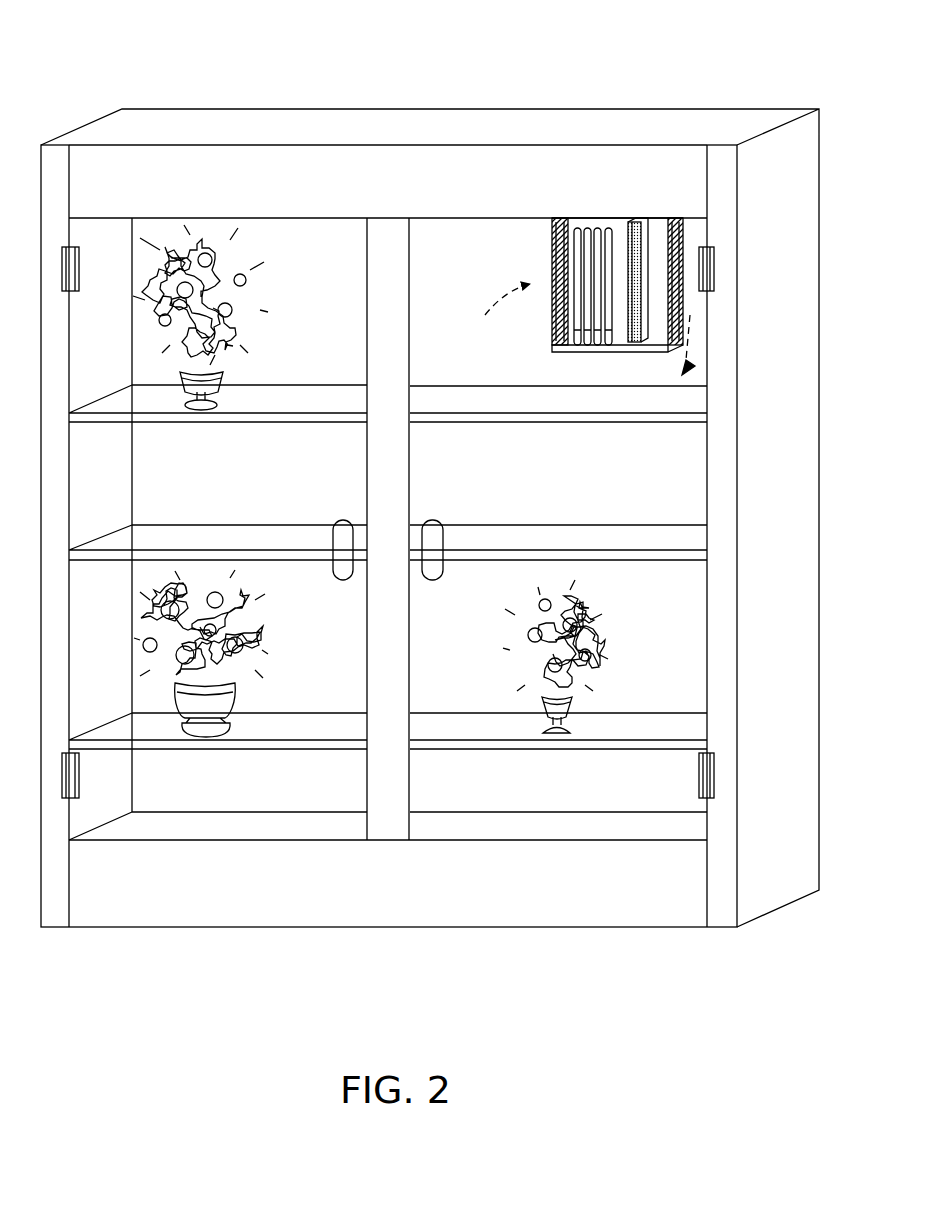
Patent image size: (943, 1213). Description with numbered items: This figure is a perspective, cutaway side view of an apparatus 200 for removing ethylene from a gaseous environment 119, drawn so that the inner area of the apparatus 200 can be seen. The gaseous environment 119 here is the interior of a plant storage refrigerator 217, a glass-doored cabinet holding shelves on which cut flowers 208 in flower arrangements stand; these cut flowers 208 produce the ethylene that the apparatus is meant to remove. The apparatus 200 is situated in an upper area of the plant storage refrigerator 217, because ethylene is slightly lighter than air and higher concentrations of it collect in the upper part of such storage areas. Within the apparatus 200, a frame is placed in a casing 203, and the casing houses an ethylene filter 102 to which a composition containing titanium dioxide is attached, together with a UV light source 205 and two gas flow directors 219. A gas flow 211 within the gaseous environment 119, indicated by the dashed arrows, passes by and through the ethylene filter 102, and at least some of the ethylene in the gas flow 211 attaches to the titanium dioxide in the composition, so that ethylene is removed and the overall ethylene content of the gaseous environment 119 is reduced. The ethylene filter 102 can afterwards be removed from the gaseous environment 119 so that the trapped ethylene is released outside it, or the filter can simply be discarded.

The apparatus 200 is at (562, 180).
The casing 203 is at (552, 243).
The UV light source 205 is at (603, 228).
The ethylene filter 102 is at (632, 228).
The gas flow directors 219 is at (683, 232).
The gas flow 211 is at (500, 295).
The cut flowers 208 is at (193, 315).
The plant storage refrigerator 217 is at (303, 173).
The gaseous environment 119 is at (437, 280).